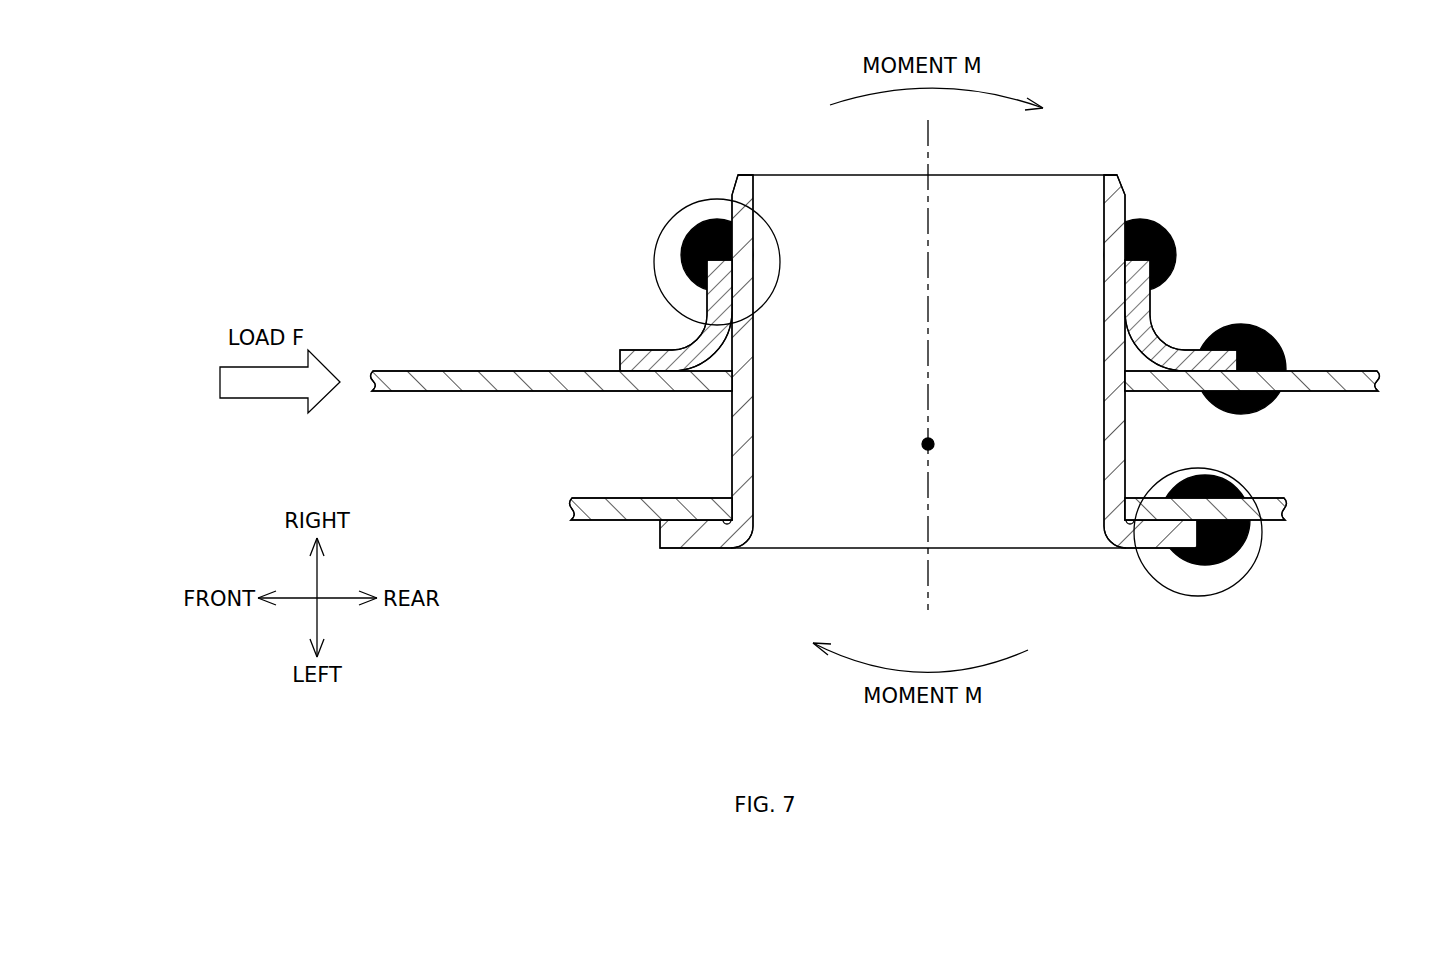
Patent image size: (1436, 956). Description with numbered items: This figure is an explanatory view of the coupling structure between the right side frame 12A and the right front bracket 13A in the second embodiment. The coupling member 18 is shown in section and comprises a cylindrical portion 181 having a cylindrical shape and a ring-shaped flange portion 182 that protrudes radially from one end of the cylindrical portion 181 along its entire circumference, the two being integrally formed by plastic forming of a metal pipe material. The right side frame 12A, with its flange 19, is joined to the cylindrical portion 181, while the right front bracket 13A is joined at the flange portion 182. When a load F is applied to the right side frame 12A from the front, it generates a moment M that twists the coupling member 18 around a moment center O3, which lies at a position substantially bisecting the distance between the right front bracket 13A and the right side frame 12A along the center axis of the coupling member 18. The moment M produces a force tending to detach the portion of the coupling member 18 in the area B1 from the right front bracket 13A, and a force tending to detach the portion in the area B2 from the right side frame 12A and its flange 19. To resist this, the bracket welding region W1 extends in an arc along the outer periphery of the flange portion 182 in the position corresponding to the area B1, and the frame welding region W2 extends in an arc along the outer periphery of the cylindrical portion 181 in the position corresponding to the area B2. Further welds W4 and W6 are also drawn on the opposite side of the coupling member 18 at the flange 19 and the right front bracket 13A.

The coupling member 18 is at (1127, 193).
The cylindrical portion 181 is at (1103, 447).
The flange portion 182 is at (1155, 537).
The flange 19 is at (650, 350).
The right side frame 12A is at (435, 369).
The right front bracket 13A is at (1273, 522).
The bracket welding region W1 is at (1217, 567).
The frame welding region W2 is at (685, 245).
The weld W4 is at (1163, 228).
The weld W6 is at (1285, 340).
The area B1 is at (1236, 470).
The area B2 is at (688, 200).
The moment center O3 is at (928, 444).